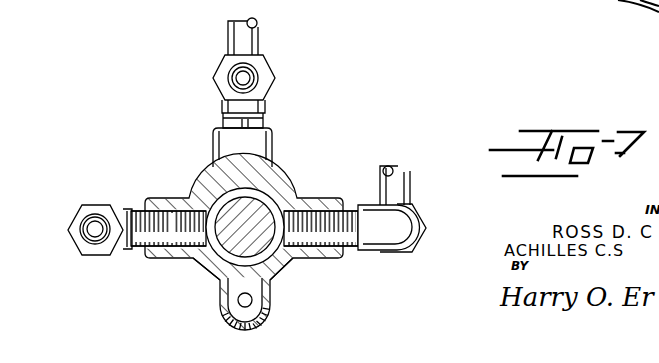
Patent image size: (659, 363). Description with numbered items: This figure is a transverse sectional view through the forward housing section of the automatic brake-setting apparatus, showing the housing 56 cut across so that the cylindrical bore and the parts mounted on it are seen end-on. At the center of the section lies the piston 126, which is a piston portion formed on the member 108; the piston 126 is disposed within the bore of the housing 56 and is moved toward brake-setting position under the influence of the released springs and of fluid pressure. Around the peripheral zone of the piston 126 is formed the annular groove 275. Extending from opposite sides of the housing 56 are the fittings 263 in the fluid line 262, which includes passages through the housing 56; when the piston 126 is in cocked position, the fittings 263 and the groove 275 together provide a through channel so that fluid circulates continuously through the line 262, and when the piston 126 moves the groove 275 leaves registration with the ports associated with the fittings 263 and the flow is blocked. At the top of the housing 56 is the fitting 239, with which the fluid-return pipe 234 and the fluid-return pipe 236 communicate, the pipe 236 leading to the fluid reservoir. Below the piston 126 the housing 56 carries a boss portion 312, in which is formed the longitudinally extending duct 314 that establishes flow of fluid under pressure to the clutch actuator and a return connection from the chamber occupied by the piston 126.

The housing 56 is at (272, 166).
The member 108 is at (221, 212).
The piston 126 is at (268, 207).
The pipe 234 is at (230, 78).
The fluid-return pipe 236 is at (243, 37).
The fitting 239 is at (254, 60).
The fluid line 262 is at (80, 230).
The fittings 263 is at (105, 210).
The annular groove 275 is at (225, 258).
The boss portion 312 is at (243, 313).
The duct 314 is at (252, 300).